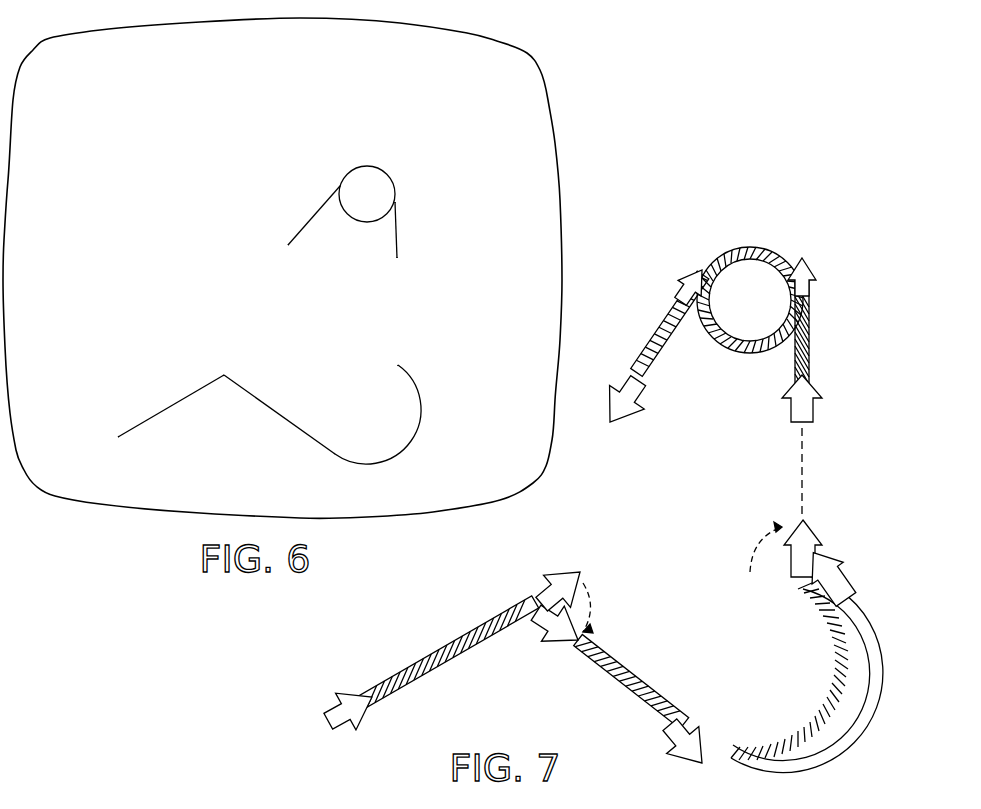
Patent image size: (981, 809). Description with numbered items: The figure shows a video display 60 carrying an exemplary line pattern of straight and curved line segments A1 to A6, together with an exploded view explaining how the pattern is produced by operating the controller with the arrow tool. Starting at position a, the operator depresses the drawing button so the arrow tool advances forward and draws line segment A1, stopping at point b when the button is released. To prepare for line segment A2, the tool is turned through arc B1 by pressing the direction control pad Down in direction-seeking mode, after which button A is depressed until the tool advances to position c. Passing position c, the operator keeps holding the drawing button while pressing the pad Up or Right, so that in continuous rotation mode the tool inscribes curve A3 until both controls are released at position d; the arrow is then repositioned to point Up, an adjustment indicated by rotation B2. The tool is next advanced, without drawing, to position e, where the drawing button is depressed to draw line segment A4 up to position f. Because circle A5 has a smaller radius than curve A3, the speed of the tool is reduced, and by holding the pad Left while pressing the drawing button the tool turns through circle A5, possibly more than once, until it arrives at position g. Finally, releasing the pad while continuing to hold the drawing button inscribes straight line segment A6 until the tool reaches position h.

In FIG. 6, the video display 60 is at (557, 146).
In FIG. 6, the line segment A1 is at (171, 406).
In FIG. 7, the line segment A1 is at (449, 652).
In FIG. 6, the line segment A2 is at (279, 414).
In FIG. 7, the line segment A2 is at (631, 681).
In FIG. 6, the curve A3 is at (388, 414).
In FIG. 7, the curve A3 is at (807, 673).
In FIG. 6, the line segment A4 is at (415, 230).
In FIG. 7, the line segment A4 is at (820, 337).
In FIG. 6, the circle A5 is at (367, 194).
In FIG. 7, the circle A5 is at (750, 300).
In FIG. 6, the straight line segment A6 is at (314, 216).
In FIG. 7, the straight line segment A6 is at (670, 325).
In FIG. 7, the arc B1 is at (603, 608).
In FIG. 7, the rotation at point d B2 is at (754, 540).
In FIG. 6, the position A a is at (110, 422).
In FIG. 7, the position A a is at (346, 709).
In FIG. 6, the corner point b is at (222, 364).
In FIG. 7, the corner point b is at (556, 606).
In FIG. 6, the position C c is at (328, 466).
In FIG. 7, the position C c is at (686, 743).
In FIG. 6, the position D d is at (393, 353).
In FIG. 7, the position D d is at (823, 519).
In FIG. 6, the position E e is at (395, 270).
In FIG. 7, the position E e is at (807, 401).
In FIG. 6, the position F f is at (401, 190).
In FIG. 7, the position F f is at (811, 281).
In FIG. 6, the position G g is at (326, 178).
In FIG. 7, the position G g is at (681, 285).
In FIG. 6, the position H h is at (281, 258).
In FIG. 7, the position H h is at (617, 401).